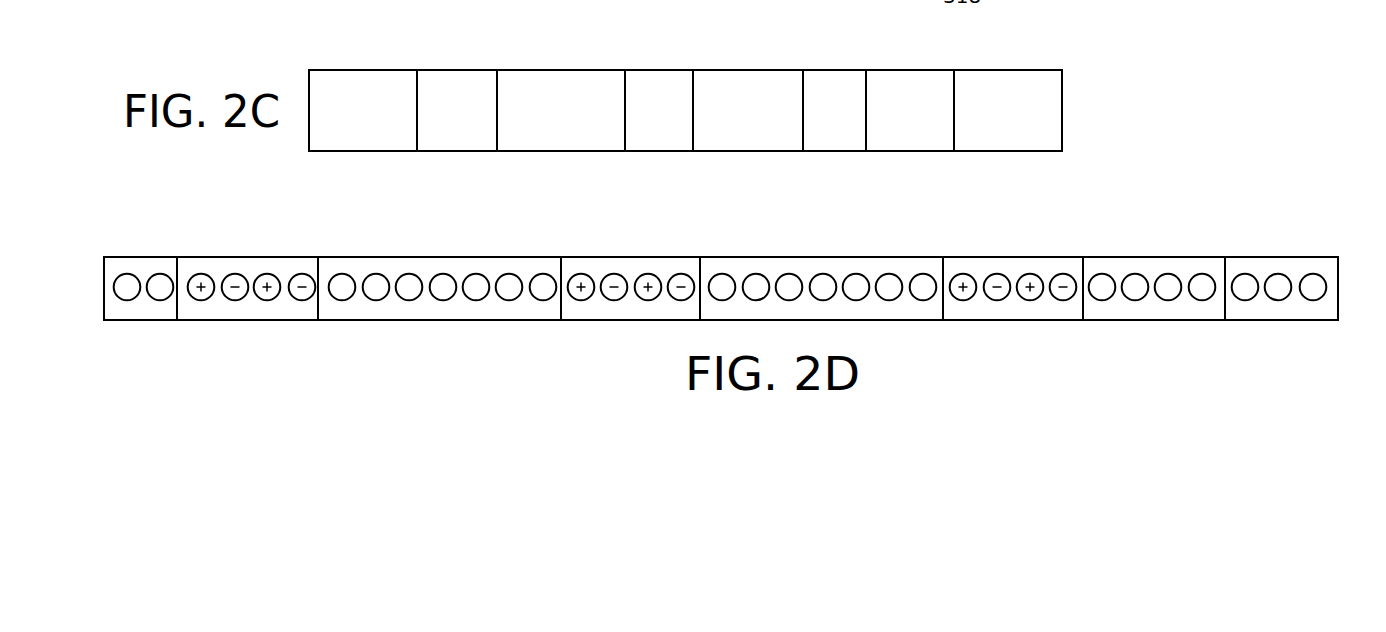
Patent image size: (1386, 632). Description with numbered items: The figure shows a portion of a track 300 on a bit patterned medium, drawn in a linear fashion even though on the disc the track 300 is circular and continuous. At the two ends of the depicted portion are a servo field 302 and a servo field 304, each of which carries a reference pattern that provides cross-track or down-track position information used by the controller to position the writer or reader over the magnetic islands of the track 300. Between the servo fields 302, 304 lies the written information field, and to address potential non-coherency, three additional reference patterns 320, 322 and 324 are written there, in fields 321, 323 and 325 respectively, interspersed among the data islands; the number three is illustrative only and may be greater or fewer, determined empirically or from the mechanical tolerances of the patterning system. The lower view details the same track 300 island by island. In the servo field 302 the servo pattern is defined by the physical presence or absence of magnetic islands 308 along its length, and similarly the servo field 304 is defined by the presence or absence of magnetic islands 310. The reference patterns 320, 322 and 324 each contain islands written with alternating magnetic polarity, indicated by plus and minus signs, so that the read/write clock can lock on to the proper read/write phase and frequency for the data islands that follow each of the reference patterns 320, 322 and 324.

In FIG. 2C, the track 300 is at (1048, 64).
In FIG. 2D, the track 300 is at (138, 327).
In FIG. 2C, the servo field 302 is at (370, 70).
In FIG. 2D, the servo field 302 is at (177, 260).
In FIG. 2C, the servo field 304 is at (975, 70).
In FIG. 2D, the servo field 304 is at (1285, 299).
In FIG. 2D, the magnetic islands 308 is at (128, 273).
In FIG. 2D, the magnetic islands 310 is at (1245, 300).
In FIG. 2C, the reference pattern 320 is at (452, 70).
In FIG. 2D, the reference pattern 320 is at (255, 268).
In FIG. 2C, the field 321 is at (455, 151).
In FIG. 2C, the reference pattern 322 is at (653, 70).
In FIG. 2D, the reference pattern 322 is at (597, 267).
In FIG. 2C, the field 323 is at (653, 148).
In FIG. 2C, the reference pattern 324 is at (827, 70).
In FIG. 2D, the reference pattern 324 is at (1017, 267).
In FIG. 2C, the field 325 is at (832, 151).